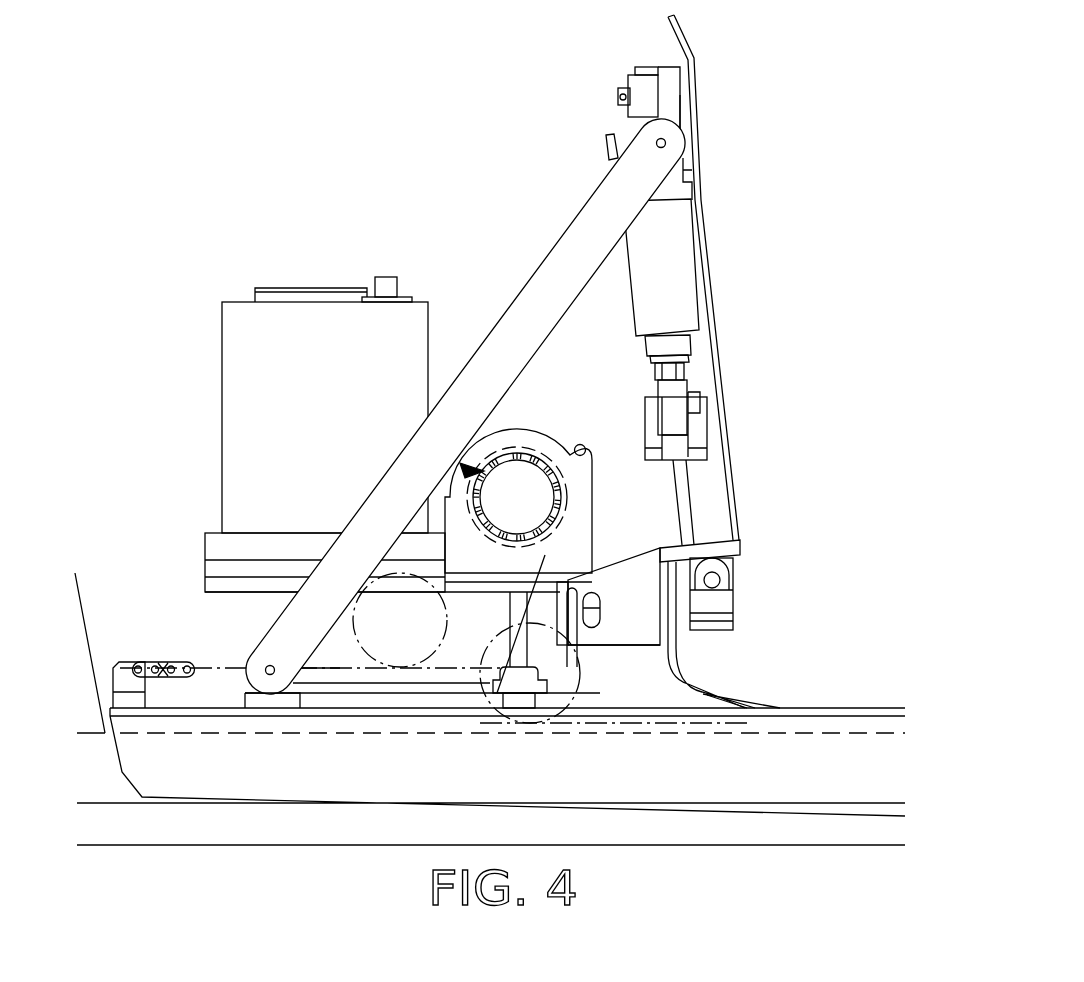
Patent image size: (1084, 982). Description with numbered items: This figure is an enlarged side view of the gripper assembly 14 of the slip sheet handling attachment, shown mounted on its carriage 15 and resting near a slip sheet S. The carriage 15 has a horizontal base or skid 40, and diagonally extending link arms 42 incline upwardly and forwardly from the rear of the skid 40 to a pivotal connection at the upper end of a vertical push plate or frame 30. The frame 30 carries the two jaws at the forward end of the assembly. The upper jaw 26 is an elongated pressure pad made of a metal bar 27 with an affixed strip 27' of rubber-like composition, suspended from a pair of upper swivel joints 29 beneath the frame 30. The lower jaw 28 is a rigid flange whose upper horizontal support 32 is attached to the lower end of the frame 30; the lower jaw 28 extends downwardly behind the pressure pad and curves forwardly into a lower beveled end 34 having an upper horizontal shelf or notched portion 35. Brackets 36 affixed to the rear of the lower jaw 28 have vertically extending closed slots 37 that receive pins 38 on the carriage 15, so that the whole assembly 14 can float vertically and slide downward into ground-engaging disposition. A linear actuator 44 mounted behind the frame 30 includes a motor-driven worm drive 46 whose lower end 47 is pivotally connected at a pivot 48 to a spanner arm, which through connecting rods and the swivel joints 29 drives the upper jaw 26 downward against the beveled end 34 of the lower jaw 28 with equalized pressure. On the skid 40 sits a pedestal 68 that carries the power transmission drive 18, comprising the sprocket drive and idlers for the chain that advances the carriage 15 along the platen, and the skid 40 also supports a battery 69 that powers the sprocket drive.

The gripper assembly 14 is at (515, 252).
The carriage 15 is at (507, 588).
The power transmission drive 18 is at (517, 430).
The upper jaw 26 is at (723, 602).
The metal bar 27 is at (760, 615).
The strip 27' is at (762, 636).
The lower jaw 28 is at (700, 660).
The upper swivel joints 29 is at (722, 576).
The frame 30 is at (730, 463).
The upper horizontal support 32 is at (733, 547).
The lower beveled end 34 is at (727, 700).
The upper horizontal shelf 35 is at (717, 705).
The brackets 36 is at (632, 562).
The closed slots 37 is at (603, 645).
The pins 38 is at (593, 612).
The skid 40 is at (288, 702).
The link arms 42 is at (355, 523).
The linear actuator 44 is at (612, 137).
The worm drive 46 is at (645, 238).
The lower end 47 is at (675, 392).
The pivotal connection 48 is at (703, 422).
The pedestal 68 is at (205, 590).
The battery 69 is at (233, 338).
The slip sheet S is at (787, 708).